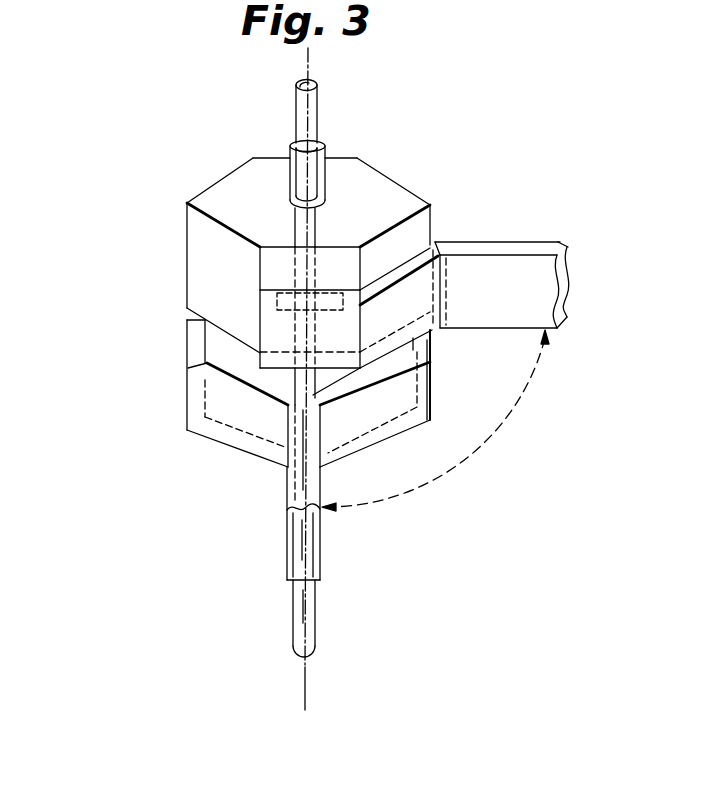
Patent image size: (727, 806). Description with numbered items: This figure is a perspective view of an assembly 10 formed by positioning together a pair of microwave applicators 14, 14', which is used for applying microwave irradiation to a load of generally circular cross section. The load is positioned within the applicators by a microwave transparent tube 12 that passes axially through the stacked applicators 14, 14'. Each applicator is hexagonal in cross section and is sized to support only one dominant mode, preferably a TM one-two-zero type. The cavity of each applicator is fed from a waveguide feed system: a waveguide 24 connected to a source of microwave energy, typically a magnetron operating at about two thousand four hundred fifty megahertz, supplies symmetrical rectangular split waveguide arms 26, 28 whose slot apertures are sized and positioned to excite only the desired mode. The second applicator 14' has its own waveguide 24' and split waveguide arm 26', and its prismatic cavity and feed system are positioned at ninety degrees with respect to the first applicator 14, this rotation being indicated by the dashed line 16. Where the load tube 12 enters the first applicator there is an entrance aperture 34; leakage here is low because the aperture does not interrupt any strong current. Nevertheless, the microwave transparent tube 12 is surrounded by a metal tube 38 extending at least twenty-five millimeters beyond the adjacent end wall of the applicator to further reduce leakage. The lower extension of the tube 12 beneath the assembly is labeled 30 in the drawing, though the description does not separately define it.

The assembly 10 is at (165, 435).
The microwave transparent tube 12 is at (321, 116).
The microwave applicator 14 is at (344, 263).
The second microwave applicator 14' is at (406, 402).
The dashed line 16 is at (510, 433).
The waveguide 24 is at (508, 258).
The waveguide 24' is at (344, 492).
The split waveguide arm 26 is at (230, 427).
The split waveguide arm 26' is at (146, 375).
The split waveguide arm 28 is at (407, 427).
The rod end 30 is at (305, 680).
The entrance aperture 34 is at (331, 189).
The metal tube 38 is at (290, 172).